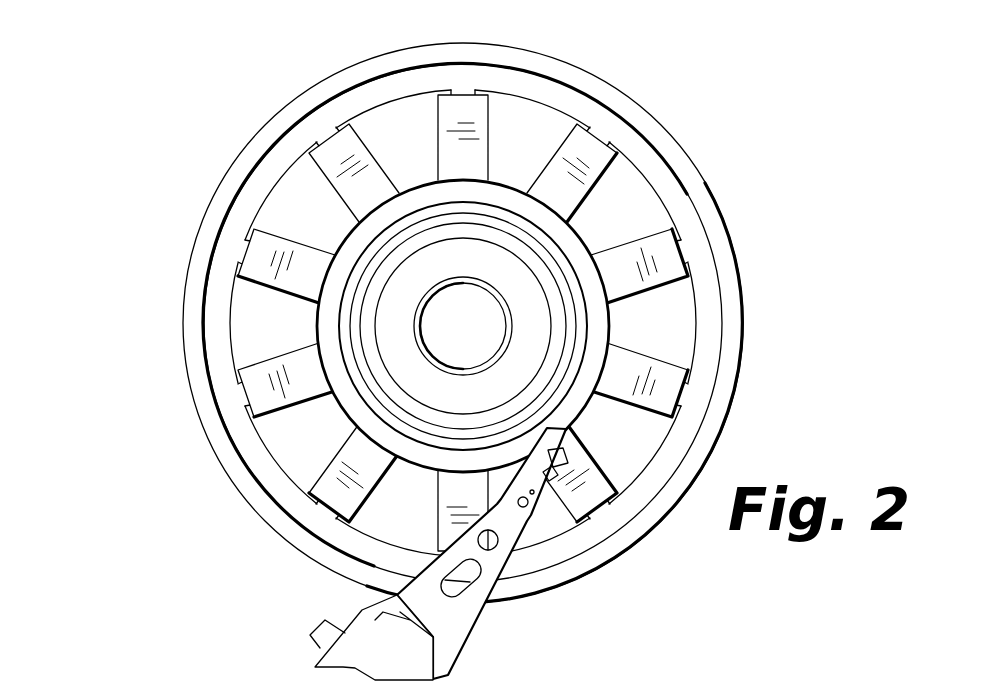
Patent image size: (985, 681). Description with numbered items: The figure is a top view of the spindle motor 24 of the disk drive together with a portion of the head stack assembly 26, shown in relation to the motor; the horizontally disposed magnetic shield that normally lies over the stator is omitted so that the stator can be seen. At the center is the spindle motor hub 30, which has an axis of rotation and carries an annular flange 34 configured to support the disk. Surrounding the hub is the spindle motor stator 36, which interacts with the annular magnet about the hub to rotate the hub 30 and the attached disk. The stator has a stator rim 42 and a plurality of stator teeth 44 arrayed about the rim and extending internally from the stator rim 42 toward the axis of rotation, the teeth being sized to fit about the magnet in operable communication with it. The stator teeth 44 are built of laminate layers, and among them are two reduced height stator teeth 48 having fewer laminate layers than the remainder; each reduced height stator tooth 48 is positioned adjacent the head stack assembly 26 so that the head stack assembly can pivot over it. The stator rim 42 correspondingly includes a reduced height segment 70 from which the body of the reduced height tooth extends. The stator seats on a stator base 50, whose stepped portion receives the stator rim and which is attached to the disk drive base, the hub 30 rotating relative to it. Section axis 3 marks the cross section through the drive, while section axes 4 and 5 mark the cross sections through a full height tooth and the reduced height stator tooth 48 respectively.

The section axis 3- 3 is at (462, 36).
The section axis 4- 4 is at (586, 366).
The section axis 5- 5 is at (538, 430).
The spindle motor 24 is at (284, 72).
The head stack assembly 26 is at (452, 655).
The spindle motor hub 30 is at (553, 263).
The annular flange 34 is at (323, 330).
The spindle motor stator 36 is at (692, 247).
The stator rim 42 is at (707, 283).
The stator teeth 44 is at (342, 172).
The reduced height stator tooth 48 is at (447, 492).
The stator base 50 is at (595, 570).
The reduced height segment 70 is at (530, 570).